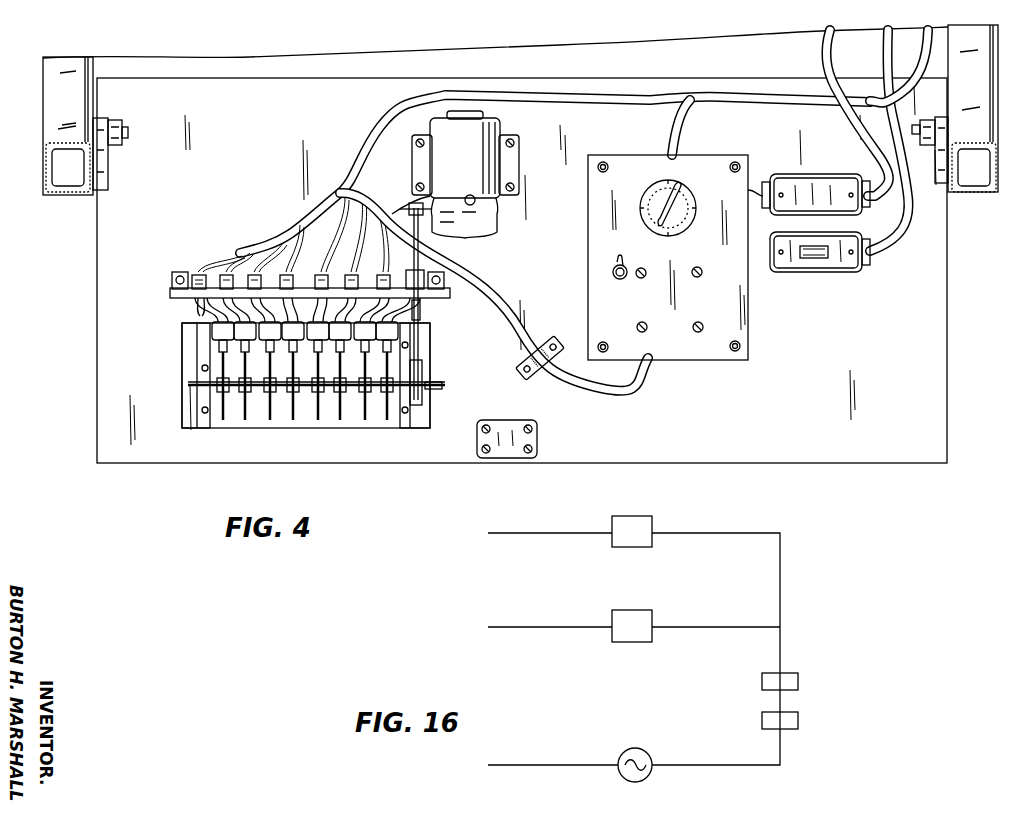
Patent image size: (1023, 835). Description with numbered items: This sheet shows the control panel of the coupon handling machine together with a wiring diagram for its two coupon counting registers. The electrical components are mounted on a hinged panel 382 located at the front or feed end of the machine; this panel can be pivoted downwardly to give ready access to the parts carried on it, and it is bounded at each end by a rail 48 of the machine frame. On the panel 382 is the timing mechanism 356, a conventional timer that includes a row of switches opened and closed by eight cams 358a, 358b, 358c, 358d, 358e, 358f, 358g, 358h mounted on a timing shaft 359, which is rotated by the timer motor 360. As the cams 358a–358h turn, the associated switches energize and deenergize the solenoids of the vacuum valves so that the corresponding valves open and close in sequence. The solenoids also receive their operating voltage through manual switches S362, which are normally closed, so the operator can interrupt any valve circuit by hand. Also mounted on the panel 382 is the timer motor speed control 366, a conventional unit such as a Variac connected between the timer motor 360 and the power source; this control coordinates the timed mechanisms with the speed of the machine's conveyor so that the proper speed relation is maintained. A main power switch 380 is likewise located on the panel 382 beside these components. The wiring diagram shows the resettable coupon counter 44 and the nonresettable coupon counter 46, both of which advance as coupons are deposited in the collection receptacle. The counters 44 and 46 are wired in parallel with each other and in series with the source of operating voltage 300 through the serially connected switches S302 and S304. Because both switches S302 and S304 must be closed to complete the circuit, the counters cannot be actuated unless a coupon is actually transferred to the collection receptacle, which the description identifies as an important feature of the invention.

In FIG. 4, the side rail 48 is at (62, 108).
In FIG. 4, the timing mechanism 356 is at (352, 142).
In FIG. 4, the cam 358a is at (258, 447).
In FIG. 4, the cam 358b is at (248, 416).
In FIG. 4, the cam 358c is at (272, 416).
In FIG. 4, the cam 358d is at (295, 416).
In FIG. 4, the cam 358e is at (320, 416).
In FIG. 4, the cam 358f is at (342, 416).
In FIG. 4, the cam 358g is at (366, 416).
In FIG. 4, the cam 358h is at (388, 416).
In FIG. 4, the timing shaft 359 is at (437, 386).
In FIG. 4, the timer motor 360 is at (500, 202).
In FIG. 4, the manual switch S362 is at (198, 312).
In FIG. 4, the speed control 366 is at (748, 308).
In FIG. 4, the main power switch 380 is at (833, 270).
In FIG. 4, the hinged panel 382 is at (948, 410).
In FIG. 16, the resettable coupon counter 44 is at (632, 531).
In FIG. 16, the nonresettable coupon counter 46 is at (632, 626).
In FIG. 16, the switch S302 is at (800, 680).
In FIG. 16, the switch S304 is at (800, 720).
In FIG. 16, the source of operating voltage 300 is at (637, 782).